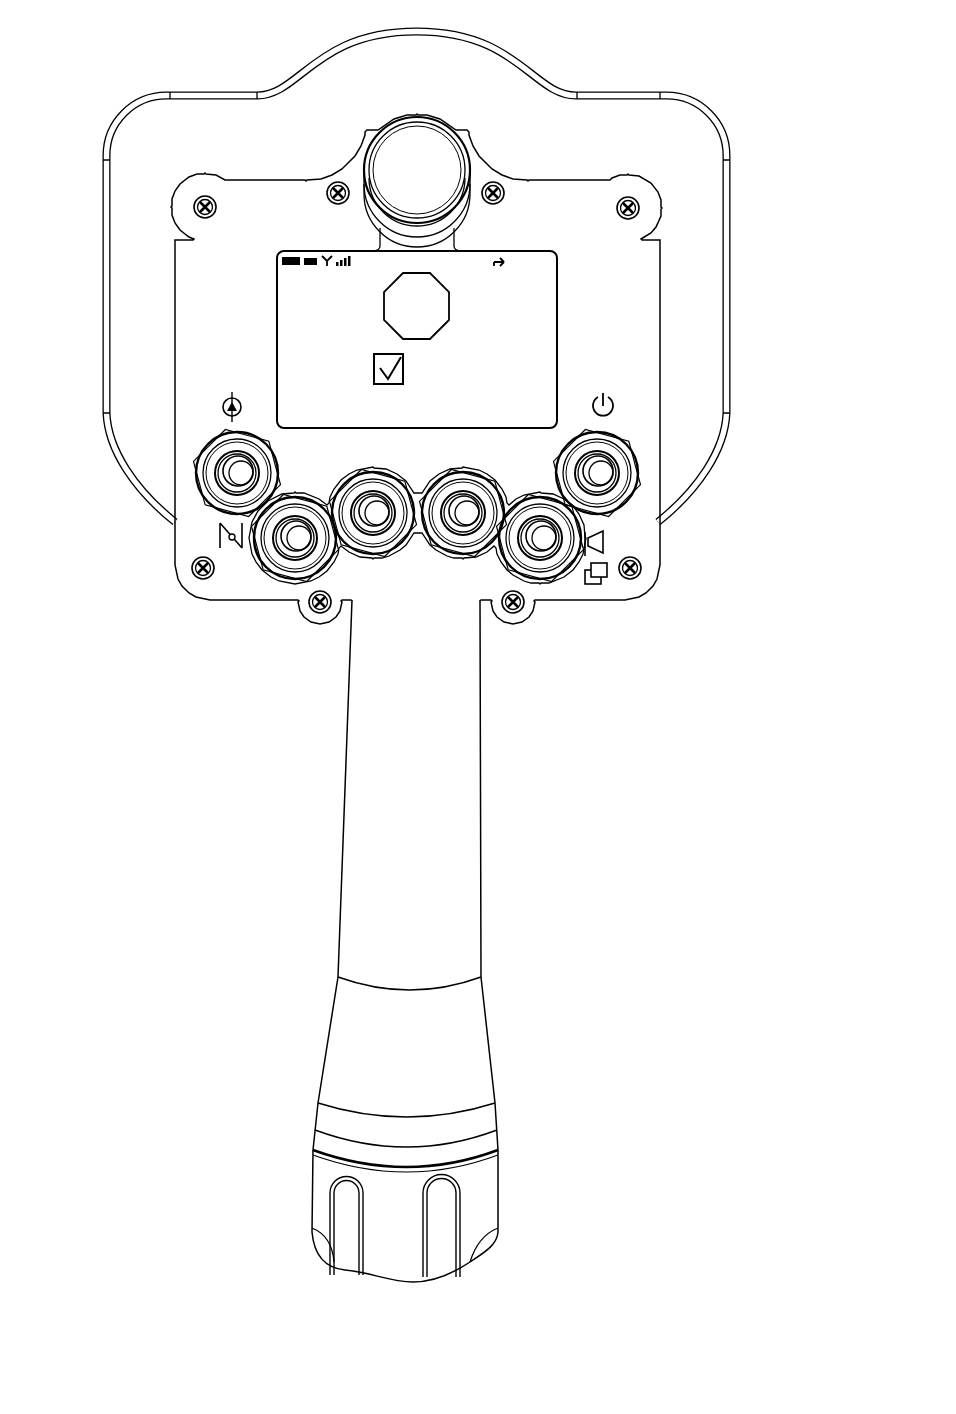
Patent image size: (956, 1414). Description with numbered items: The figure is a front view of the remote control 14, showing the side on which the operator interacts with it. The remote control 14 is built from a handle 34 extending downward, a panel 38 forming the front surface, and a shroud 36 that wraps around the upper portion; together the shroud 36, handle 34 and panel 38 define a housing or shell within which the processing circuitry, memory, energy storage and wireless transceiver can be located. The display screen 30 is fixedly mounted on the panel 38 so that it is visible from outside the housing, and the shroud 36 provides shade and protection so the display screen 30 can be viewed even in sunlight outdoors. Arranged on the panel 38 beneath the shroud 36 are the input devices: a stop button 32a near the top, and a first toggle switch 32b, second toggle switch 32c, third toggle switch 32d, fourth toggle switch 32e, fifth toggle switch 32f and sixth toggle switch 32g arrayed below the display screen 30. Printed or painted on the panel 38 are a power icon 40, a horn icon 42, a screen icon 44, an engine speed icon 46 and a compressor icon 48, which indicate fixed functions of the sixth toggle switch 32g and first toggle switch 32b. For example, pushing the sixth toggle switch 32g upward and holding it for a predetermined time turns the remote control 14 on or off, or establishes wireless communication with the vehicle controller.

The remote control 14 is at (158, 38).
The display screen 30 is at (477, 251).
The stop button 32a is at (469, 158).
The first toggle switch 32b is at (203, 492).
The second toggle switch 32c is at (290, 582).
The third toggle switch 32d is at (354, 584).
The fourth toggle switch 32e is at (482, 584).
The fifth toggle switch 32f is at (548, 582).
The sixth toggle switch 32g is at (637, 462).
The handle 34 is at (482, 823).
The shroud 36 is at (617, 89).
The panel 38 is at (630, 300).
The power icon 40 is at (614, 406).
The horn icon 42 is at (643, 578).
The screen icon 44 is at (594, 588).
The engine speed icon 46 is at (218, 540).
The compressor icon 48 is at (223, 403).